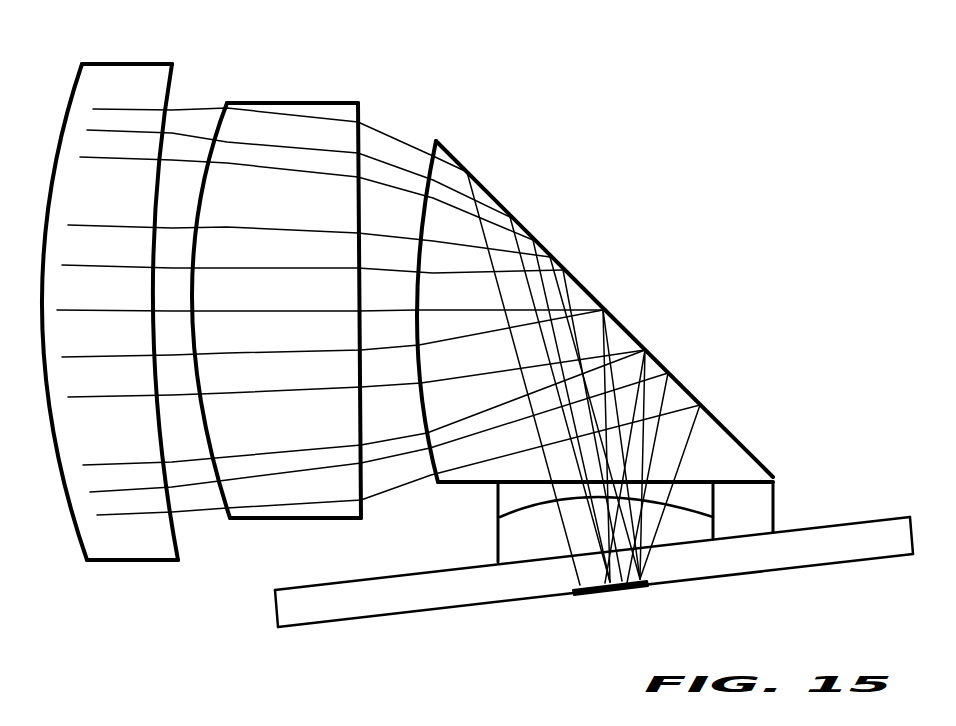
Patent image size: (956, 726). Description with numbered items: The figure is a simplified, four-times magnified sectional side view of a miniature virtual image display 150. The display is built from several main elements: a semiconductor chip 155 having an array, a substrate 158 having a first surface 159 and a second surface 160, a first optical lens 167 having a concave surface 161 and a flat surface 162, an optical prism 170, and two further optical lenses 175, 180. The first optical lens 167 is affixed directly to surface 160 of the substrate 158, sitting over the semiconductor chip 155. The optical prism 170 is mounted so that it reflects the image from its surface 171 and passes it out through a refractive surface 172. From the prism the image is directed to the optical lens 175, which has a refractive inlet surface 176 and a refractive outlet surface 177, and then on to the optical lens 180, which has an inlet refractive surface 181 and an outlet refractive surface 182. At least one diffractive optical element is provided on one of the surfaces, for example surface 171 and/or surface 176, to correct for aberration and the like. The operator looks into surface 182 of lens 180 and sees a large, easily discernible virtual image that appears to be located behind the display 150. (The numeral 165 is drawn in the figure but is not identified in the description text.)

The miniature virtual image display 150 is at (579, 270).
The semiconductor chip 155 is at (608, 596).
The substrate 158 is at (882, 518).
The surface 159 is at (800, 566).
The surface 160 is at (594, 554).
The concave surface 161 is at (543, 511).
The flat surface 162 is at (635, 500).
The prism 165 is at (579, 270).
The optical lens 167 is at (714, 510).
The optical prism 170 is at (678, 390).
The surface 171 is at (492, 196).
The refractive surface 172 is at (433, 143).
The optical lens 175 is at (288, 288).
The refractive inlet surface 176 is at (360, 104).
The refractive outlet surface 177 is at (226, 103).
The optical lens 180 is at (122, 290).
The inlet refractive surface 181 is at (173, 66).
The outlet refractive surface 182 is at (81, 67).